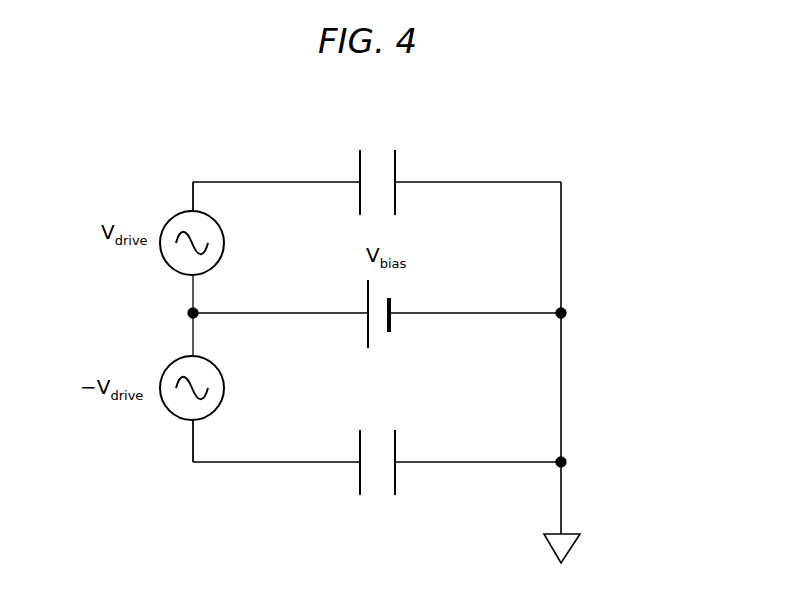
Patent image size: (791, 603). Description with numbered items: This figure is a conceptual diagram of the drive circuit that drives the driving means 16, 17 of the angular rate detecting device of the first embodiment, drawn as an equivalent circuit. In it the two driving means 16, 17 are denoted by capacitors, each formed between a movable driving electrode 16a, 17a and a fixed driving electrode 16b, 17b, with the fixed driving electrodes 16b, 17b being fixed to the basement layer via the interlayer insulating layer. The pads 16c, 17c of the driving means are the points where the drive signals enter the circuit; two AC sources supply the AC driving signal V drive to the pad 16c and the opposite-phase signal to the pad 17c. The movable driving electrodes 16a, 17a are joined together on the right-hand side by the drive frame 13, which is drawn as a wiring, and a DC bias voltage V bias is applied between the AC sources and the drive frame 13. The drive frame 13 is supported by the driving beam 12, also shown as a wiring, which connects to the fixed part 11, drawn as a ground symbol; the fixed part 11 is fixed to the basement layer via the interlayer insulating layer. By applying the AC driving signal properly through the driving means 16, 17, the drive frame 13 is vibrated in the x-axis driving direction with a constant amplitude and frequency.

The fixed part 11 is at (574, 548).
The driving beam 12 is at (563, 496).
The drive frame 13 is at (562, 235).
The drive means 16 is at (375, 178).
The movable driving electrode 16a is at (480, 180).
The fixed driving electrode 16b is at (275, 180).
The pad 16c is at (193, 197).
The drive means 17 is at (375, 458).
The movable driving electrode 17a is at (480, 460).
The fixed driving electrode 17b is at (275, 460).
The pad 17c is at (193, 437).